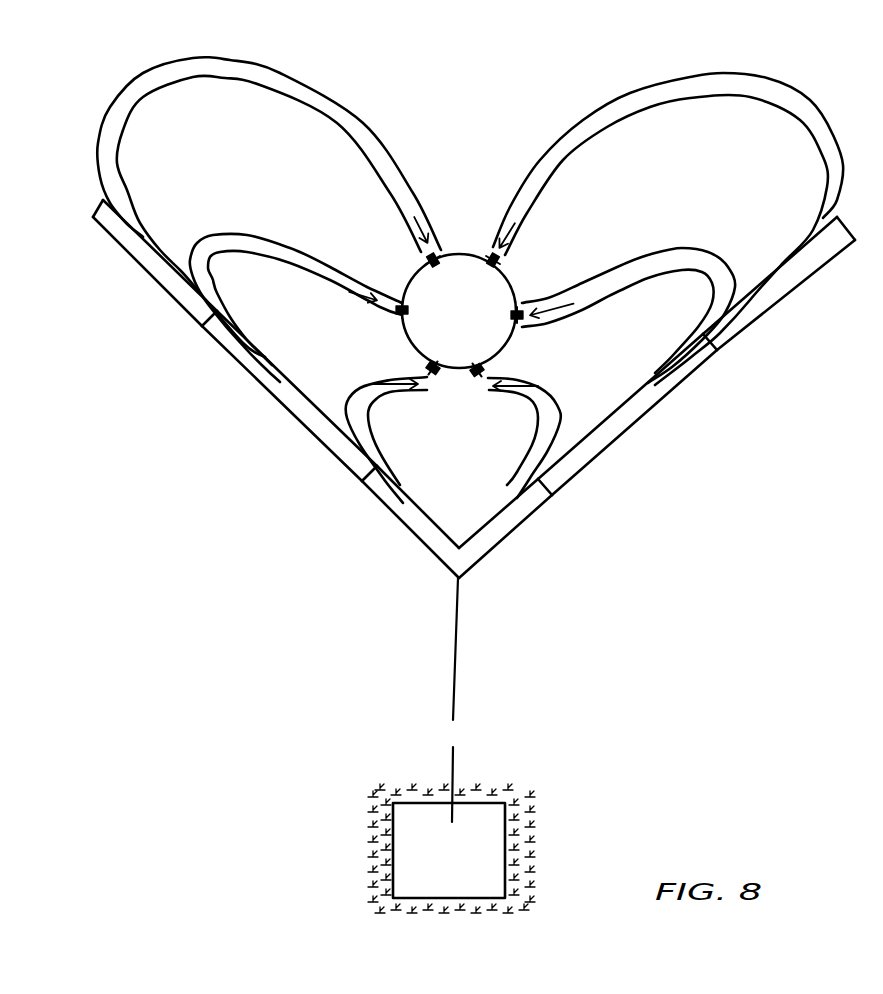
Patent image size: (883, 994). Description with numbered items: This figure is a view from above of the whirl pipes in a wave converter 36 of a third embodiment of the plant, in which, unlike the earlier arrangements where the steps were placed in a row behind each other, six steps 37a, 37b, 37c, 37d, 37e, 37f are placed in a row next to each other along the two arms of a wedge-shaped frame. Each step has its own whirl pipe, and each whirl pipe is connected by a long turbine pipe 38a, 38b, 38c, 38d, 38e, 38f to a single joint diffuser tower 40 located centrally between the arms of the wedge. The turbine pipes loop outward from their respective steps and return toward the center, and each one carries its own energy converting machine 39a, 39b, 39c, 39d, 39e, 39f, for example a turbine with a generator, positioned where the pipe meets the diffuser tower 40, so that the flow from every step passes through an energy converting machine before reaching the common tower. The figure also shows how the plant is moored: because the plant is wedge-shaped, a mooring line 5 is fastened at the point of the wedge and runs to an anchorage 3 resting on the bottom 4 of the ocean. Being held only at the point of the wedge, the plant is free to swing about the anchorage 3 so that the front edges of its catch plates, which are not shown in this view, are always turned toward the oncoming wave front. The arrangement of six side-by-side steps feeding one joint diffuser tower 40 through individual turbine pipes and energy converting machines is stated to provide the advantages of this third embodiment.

The anchorage 3 is at (505, 850).
The bottom 4 is at (466, 945).
The mooring line 5 is at (452, 655).
The wave converter 36 is at (467, 389).
The step 37a is at (152, 283).
The step 37b is at (297, 425).
The step 37c is at (385, 508).
The step 37d is at (522, 530).
The step 37e is at (650, 424).
The step 37f is at (800, 290).
The turbine pipe 38a is at (185, 82).
The turbine pipe 38b is at (228, 258).
The turbine pipe 38c is at (346, 396).
The turbine pipe 38d is at (560, 418).
The turbine pipe 38e is at (690, 340).
The turbine pipe 38f is at (730, 98).
The energy converting machine 39a is at (426, 258).
The energy converting machine 39b is at (402, 318).
The energy converting machine 39c is at (438, 378).
The energy converting machine 39d is at (475, 380).
The energy converting machine 39e is at (530, 296).
The energy converting machine 39f is at (488, 252).
The joint diffuser tower 40 is at (473, 325).